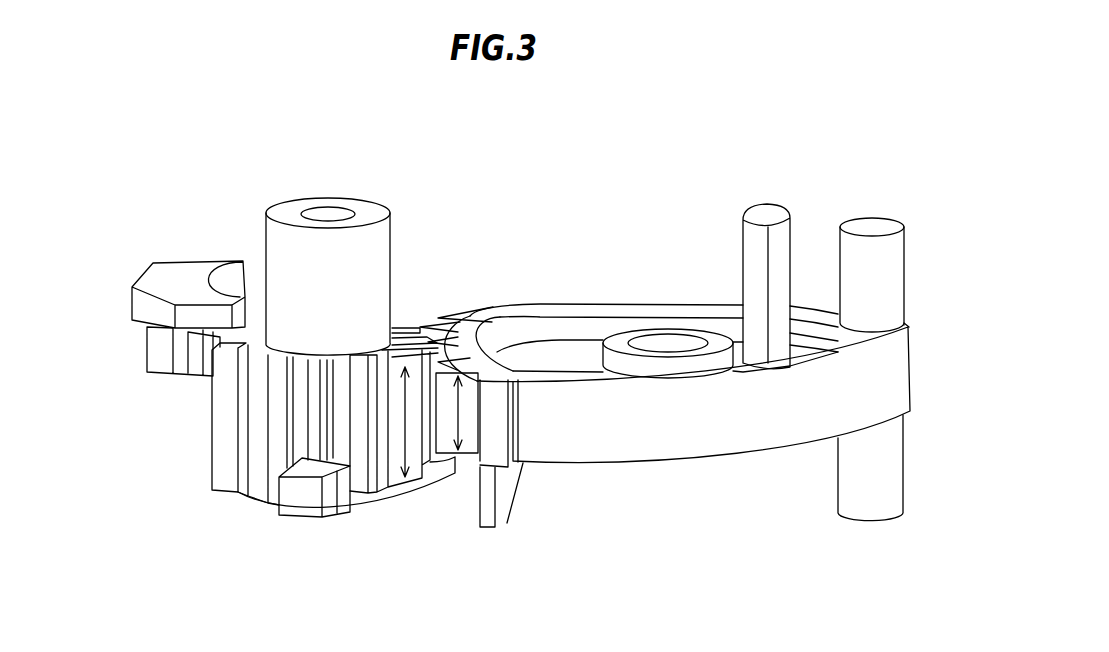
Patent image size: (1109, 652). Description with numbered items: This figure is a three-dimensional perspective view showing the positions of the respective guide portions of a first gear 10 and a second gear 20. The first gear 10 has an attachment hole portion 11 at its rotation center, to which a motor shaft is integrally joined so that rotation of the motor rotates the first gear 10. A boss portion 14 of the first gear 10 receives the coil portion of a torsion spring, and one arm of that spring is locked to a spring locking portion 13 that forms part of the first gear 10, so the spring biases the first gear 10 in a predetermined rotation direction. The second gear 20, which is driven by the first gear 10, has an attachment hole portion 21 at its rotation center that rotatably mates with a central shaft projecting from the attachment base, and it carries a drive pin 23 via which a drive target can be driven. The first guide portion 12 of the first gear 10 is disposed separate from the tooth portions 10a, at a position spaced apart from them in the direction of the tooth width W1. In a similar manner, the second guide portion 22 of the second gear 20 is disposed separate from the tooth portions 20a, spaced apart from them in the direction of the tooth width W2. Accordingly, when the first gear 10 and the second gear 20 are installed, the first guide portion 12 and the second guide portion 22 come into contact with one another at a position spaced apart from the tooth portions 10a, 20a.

The first gear 10 is at (259, 148).
The tooth portions 10a is at (363, 433).
The attachment hole portion 11 is at (334, 210).
The first guide portion 12 is at (292, 513).
The spring locking portion 13 is at (180, 272).
The boss portion 14 is at (393, 245).
The second gear 20 is at (767, 155).
The tooth portions 20a is at (454, 312).
The attachment hole portion 21 is at (651, 333).
The second guide portion 22 is at (502, 520).
The drive pin 23 is at (882, 225).
The tooth width W1 is at (405, 448).
The tooth width W2 is at (460, 410).